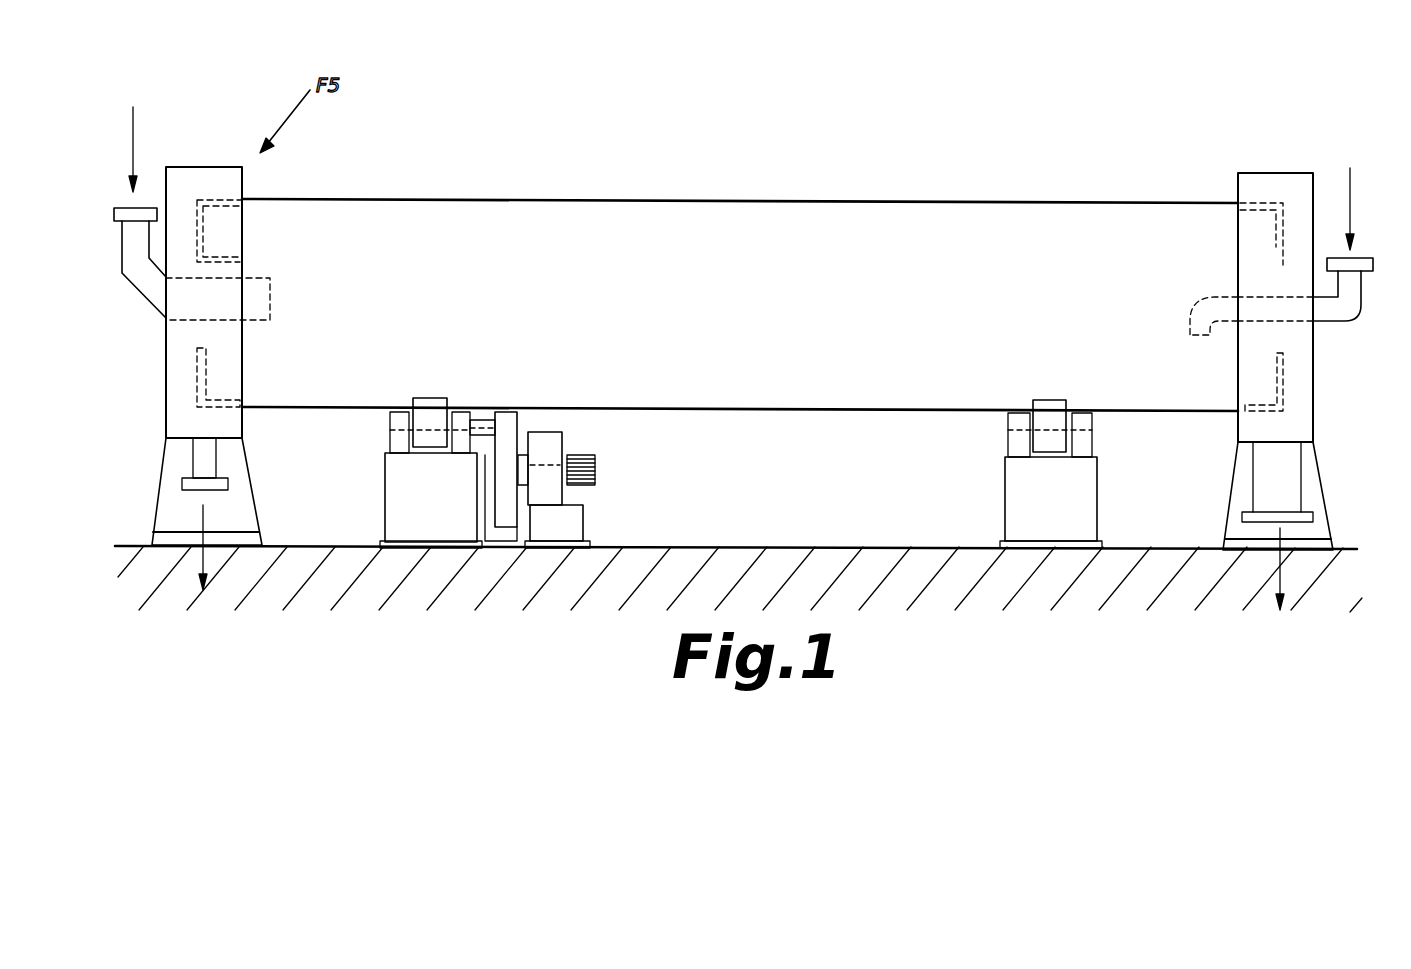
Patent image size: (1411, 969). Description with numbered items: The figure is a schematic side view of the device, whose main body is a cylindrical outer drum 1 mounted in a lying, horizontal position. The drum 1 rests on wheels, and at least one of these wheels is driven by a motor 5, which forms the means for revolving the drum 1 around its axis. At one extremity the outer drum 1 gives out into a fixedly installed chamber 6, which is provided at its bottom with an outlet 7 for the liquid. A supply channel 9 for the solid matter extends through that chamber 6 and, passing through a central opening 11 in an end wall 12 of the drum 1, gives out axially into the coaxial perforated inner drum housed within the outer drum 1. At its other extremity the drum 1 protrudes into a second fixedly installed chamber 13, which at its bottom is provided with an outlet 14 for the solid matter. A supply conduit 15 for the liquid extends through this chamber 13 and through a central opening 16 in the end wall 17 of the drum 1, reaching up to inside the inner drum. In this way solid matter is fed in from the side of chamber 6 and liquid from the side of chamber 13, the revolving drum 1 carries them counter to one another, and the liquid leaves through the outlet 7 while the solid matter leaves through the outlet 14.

The cylindrical outer drum 1 is at (795, 200).
The motor 5 is at (597, 483).
The chamber 6 is at (174, 385).
The outlet 7 is at (233, 490).
The supply channel 9 is at (143, 207).
The central opening 11 is at (197, 268).
The end wall 12 is at (197, 233).
The chamber 13 is at (1303, 399).
The outlet 14 is at (1263, 497).
The supply conduit 15 is at (1368, 260).
The central opening 16 is at (1280, 282).
The end wall 17 is at (1278, 242).